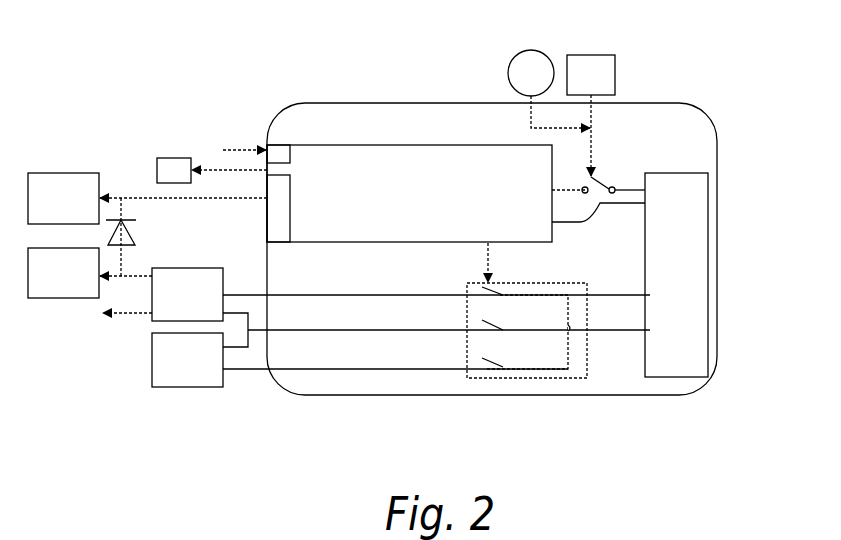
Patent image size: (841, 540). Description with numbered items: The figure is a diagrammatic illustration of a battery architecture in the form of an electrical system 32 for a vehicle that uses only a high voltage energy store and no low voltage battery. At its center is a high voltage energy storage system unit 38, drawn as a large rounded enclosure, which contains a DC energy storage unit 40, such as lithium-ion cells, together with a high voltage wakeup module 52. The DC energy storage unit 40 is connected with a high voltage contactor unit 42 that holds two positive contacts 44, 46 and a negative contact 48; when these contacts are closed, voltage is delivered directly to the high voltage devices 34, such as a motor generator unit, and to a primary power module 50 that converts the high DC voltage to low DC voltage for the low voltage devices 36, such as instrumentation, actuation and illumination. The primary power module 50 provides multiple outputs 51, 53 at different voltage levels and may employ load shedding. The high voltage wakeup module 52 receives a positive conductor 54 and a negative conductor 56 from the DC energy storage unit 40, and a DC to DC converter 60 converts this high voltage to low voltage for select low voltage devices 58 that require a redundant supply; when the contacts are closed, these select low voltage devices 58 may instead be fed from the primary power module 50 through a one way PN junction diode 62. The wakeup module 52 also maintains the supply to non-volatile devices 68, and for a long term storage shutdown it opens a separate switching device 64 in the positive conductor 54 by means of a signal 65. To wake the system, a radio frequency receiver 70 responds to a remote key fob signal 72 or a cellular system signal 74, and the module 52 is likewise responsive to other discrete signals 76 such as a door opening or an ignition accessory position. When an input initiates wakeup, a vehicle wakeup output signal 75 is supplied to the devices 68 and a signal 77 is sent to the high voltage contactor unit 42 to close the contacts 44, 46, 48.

The electrical system 32 is at (143, 112).
The high voltage energy storage system unit 38 is at (460, 103).
The high voltage wakeup module 52 is at (409, 193).
The radio frequency receiver 70 is at (281, 160).
The DC to DC converter 60 is at (268, 223).
The cellular system signal 74 is at (265, 145).
The remote operating key fob signal 72 is at (238, 148).
The vehicle wakeup output signal 75 is at (262, 166).
The devices 68 is at (174, 171).
The select low voltage devices 58 is at (147, 198).
The PN junction diode 62 is at (130, 232).
The low voltage devices 36 is at (63, 273).
The output 51 is at (127, 280).
The output 53 is at (143, 314).
The primary power module 50 is at (401, 307).
The high voltage devices 34 is at (360, 360).
The discrete signals 76 is at (549, 89).
The signal 65 is at (591, 115).
The switching device 64 is at (607, 185).
The positive conductor 54 is at (621, 186).
The negative conductor 56 is at (718, 200).
The DC energy storage unit 40 is at (670, 275).
The signal 77 is at (488, 262).
The positive contact 44 is at (493, 298).
The high voltage contactor unit 42 is at (590, 380).
The negative contact 48 is at (492, 322).
The positive contact 46 is at (488, 362).